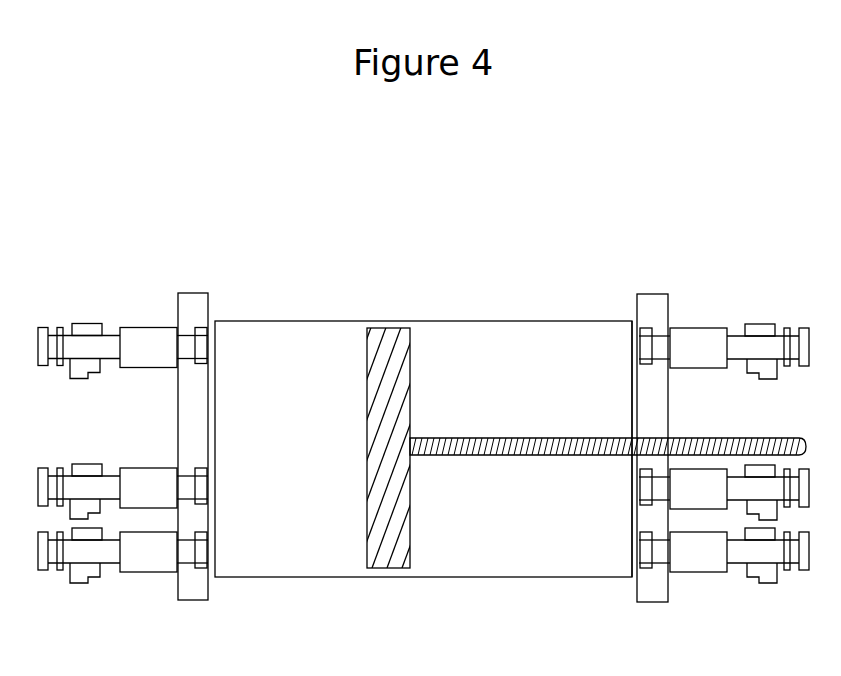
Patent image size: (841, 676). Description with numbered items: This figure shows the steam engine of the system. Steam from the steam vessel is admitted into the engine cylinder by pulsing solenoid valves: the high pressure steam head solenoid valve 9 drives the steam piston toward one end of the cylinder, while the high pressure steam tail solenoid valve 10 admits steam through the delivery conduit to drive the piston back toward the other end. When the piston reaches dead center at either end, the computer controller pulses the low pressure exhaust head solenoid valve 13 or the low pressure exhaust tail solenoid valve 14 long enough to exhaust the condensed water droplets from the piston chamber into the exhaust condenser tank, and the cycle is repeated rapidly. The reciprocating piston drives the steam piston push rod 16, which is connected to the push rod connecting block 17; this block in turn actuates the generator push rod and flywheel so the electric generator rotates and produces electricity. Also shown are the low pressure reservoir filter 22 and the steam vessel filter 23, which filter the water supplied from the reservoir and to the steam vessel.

The high pressure steam head solenoid valve 9 is at (217, 358).
The high pressure steam tail solenoid valve 10 is at (630, 362).
The low pressure exhaust head solenoid valve 13 is at (120, 573).
The low pressure exhaust tail solenoid valve 14 is at (727, 573).
The steam piston push rod 16 is at (217, 500).
The push rod connecting block 17 is at (630, 494).
The low pressure reservoir filter 22 is at (412, 405).
The steam vessel filter 23 is at (484, 436).